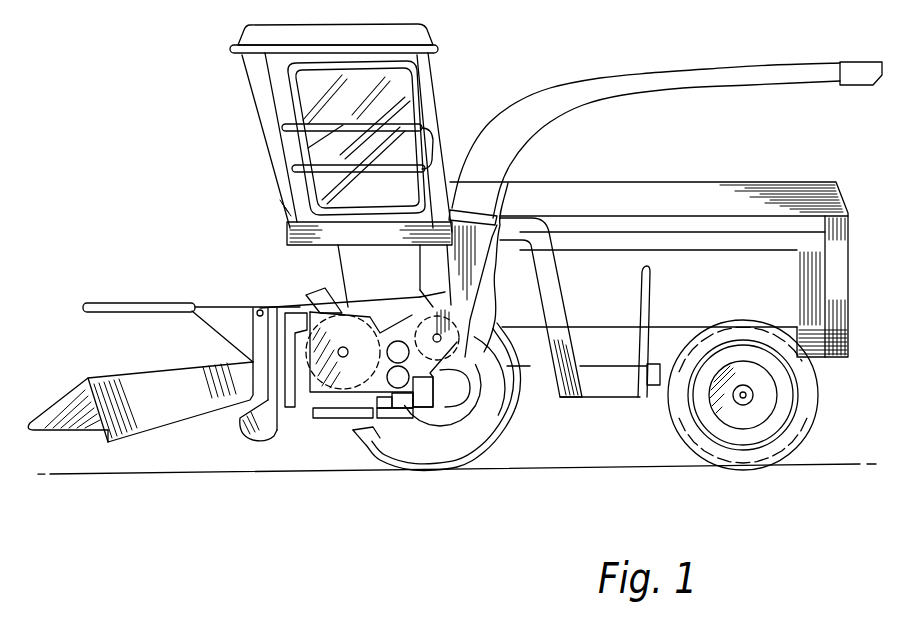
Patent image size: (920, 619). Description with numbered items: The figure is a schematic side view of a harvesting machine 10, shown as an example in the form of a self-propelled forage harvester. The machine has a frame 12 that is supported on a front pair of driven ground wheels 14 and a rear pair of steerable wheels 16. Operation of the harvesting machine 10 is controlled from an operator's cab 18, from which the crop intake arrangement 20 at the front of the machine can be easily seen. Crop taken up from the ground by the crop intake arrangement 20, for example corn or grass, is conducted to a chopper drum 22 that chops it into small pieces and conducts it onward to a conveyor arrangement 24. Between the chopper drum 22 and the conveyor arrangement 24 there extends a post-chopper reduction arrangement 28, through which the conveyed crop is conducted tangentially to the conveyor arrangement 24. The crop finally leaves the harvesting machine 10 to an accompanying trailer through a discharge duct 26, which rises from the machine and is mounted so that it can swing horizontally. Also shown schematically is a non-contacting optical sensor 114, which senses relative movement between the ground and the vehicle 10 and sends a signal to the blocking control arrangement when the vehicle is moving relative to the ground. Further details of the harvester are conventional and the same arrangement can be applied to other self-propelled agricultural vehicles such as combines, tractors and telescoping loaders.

The harvesting machine 10 is at (212, 227).
The frame 12 is at (550, 370).
The front pair of driven ground wheels 14 is at (505, 440).
The rear pair of steerable wheels 16 is at (818, 423).
The operator's cab 18 is at (260, 107).
The crop intake arrangement 20 is at (180, 427).
The chopper drum 22 is at (333, 391).
The conveyor arrangement 24 is at (422, 299).
The discharge duct 26 is at (568, 93).
The post-chopper reduction arrangement 28 is at (393, 396).
The optical sensor 114 is at (653, 387).